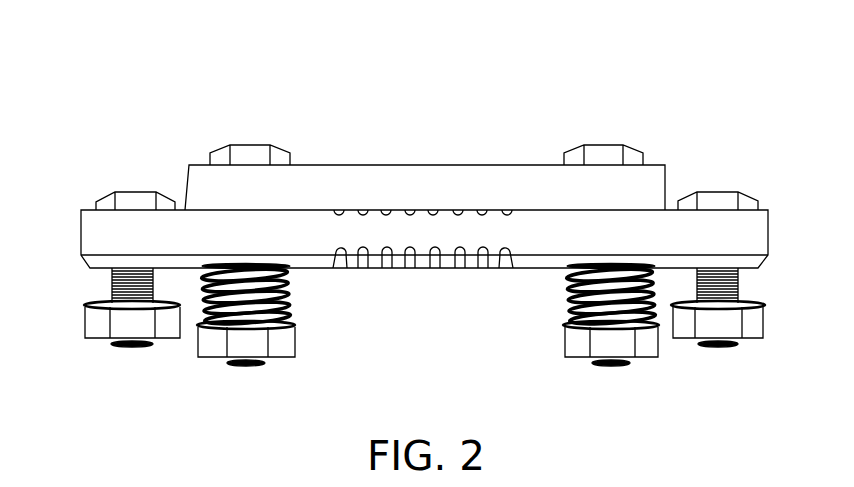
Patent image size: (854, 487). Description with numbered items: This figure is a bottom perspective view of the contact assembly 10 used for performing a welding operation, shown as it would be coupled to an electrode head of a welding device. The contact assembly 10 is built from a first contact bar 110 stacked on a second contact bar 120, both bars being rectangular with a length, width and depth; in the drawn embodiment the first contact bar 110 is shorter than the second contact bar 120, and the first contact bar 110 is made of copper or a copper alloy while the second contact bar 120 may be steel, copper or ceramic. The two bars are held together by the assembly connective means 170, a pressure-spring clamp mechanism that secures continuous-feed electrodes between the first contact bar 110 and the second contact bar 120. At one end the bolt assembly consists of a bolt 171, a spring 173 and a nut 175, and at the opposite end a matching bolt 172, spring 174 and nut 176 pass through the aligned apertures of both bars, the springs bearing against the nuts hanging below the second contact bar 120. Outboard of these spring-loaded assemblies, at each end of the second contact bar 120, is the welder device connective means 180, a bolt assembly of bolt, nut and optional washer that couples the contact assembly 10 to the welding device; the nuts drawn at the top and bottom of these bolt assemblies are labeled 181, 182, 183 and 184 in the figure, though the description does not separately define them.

The contact assembly 10 is at (653, 67).
The first contact bar 110 is at (397, 175).
The second contact bar 120 is at (410, 243).
The assembly connective means 170 is at (230, 384).
The bolt 171 is at (248, 150).
The bolt 172 is at (598, 150).
The spring 173 is at (292, 290).
The spring 174 is at (572, 293).
The nut 175 is at (292, 347).
The nut 176 is at (573, 342).
The welder device connective means 180 is at (101, 361).
The nut 181 is at (123, 197).
The nut 182 is at (713, 197).
The nut 183 is at (93, 330).
The nut 184 is at (762, 315).